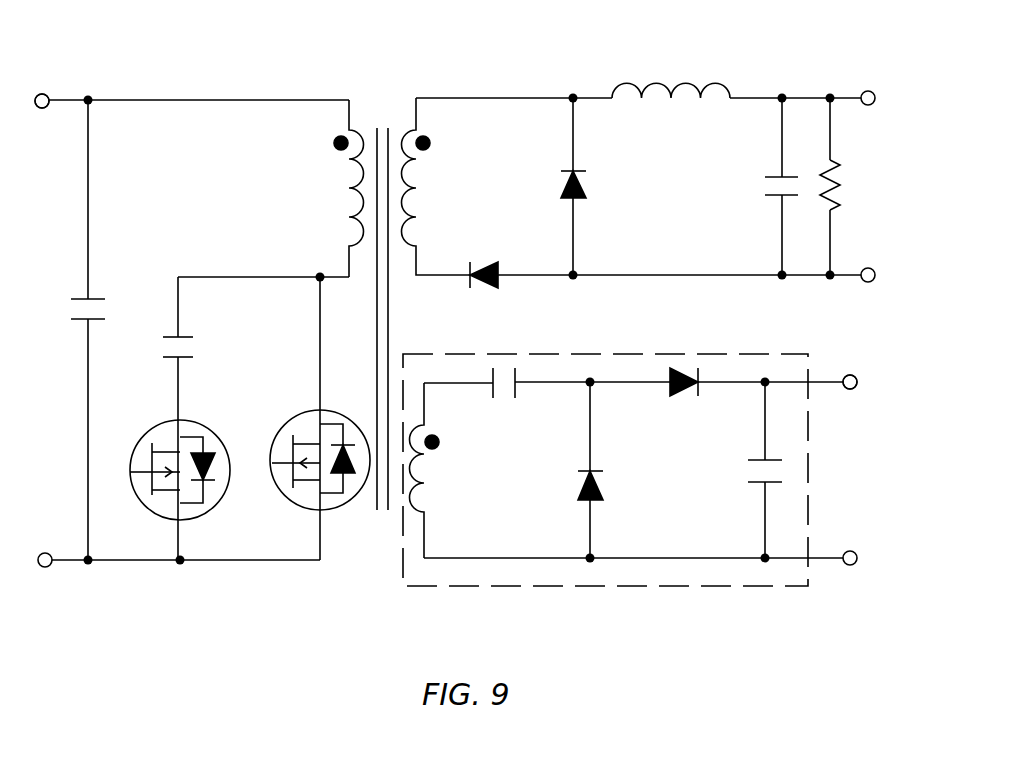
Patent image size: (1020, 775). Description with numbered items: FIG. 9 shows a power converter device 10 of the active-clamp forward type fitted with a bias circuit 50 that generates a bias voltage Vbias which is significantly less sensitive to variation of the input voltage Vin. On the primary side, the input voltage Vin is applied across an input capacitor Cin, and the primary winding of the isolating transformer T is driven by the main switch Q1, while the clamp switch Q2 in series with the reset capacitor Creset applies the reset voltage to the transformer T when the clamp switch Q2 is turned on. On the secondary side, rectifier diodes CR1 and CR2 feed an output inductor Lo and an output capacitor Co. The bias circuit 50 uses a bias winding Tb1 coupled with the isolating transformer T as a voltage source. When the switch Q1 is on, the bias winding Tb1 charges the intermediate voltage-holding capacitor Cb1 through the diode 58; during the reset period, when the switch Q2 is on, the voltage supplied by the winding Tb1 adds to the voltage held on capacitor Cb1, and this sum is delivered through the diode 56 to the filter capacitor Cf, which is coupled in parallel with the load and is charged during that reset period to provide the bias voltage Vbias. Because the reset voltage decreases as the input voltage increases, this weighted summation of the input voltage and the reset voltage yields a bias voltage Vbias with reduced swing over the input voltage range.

The power converter 10 is at (321, 63).
The input voltage terminal Vin is at (45, 93).
The input capacitor Cin is at (100, 298).
The reset capacitor Creset is at (188, 336).
The switch Q1 is at (290, 425).
The clamp switch Q2 is at (160, 424).
The isolating transformer T is at (380, 112).
The forward rectifier diode CR1 is at (480, 262).
The freewheeling rectifier diode CR2 is at (586, 190).
The output inductor Lo is at (662, 84).
The output capacitor Co is at (770, 177).
The bias circuit 50 is at (810, 468).
The bias winding Tb1 is at (412, 503).
The intermediate voltage-holding capacitor Cb1 is at (513, 372).
The diode 56 is at (685, 372).
The diode 58 is at (600, 487).
The filter capacitor Cf is at (757, 457).
The bias voltage output terminal Vbias is at (886, 382).